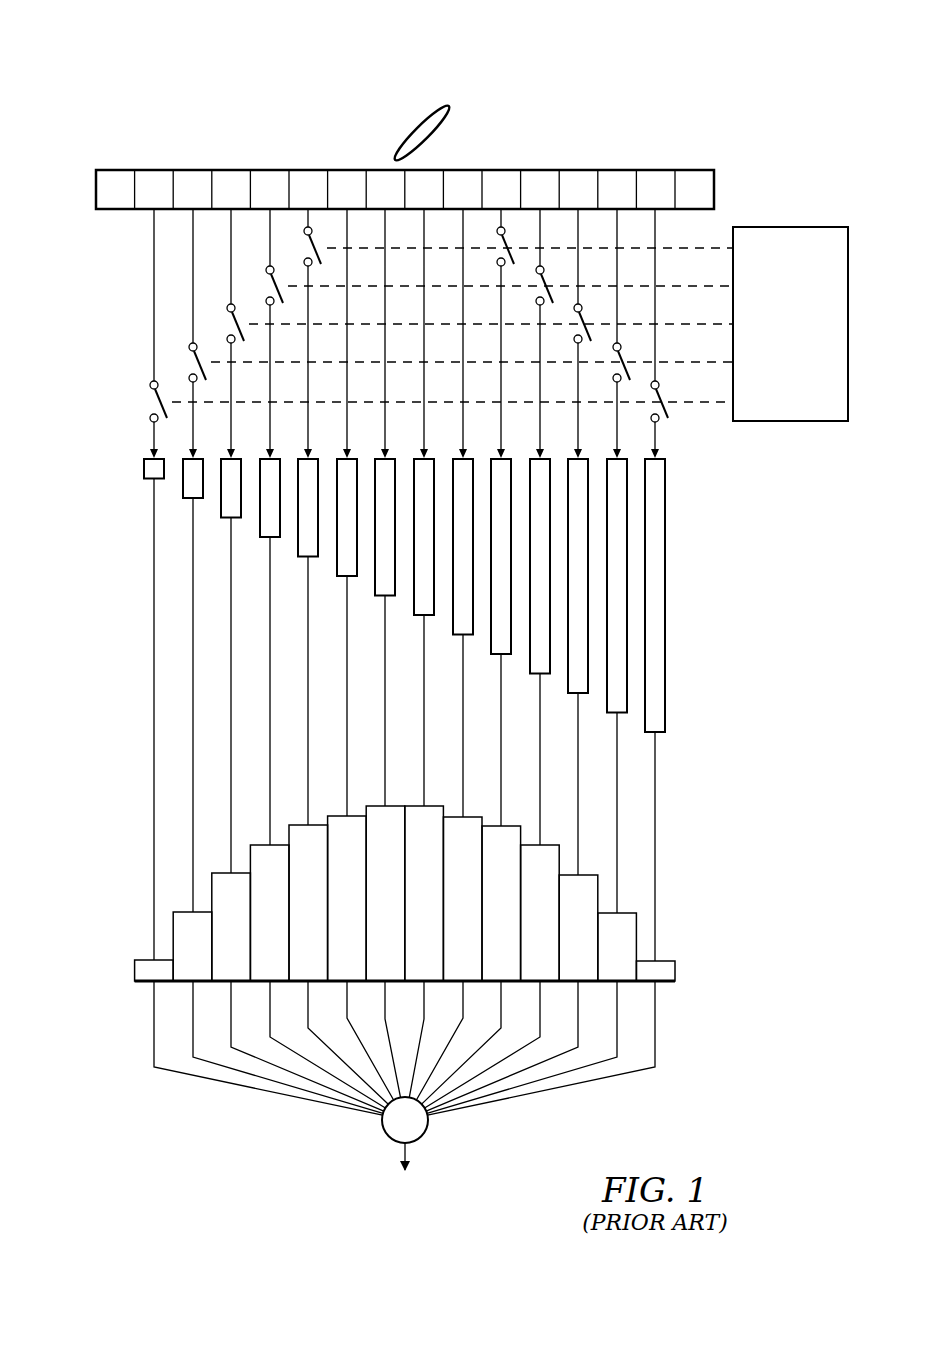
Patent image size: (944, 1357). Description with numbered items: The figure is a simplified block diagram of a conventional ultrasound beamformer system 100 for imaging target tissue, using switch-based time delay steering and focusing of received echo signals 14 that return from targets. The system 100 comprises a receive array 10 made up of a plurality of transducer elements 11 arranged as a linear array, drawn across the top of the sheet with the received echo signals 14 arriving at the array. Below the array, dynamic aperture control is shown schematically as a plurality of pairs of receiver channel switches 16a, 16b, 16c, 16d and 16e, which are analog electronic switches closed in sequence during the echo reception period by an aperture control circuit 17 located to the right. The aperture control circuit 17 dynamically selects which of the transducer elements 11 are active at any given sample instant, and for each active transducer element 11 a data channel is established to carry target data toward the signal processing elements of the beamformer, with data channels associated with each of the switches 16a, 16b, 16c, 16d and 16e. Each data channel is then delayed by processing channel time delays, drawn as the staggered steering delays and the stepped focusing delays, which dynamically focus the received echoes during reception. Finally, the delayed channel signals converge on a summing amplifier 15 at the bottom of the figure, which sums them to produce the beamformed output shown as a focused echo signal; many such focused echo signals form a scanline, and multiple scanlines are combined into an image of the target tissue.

The ultrasound beamformer system 100 is at (703, 60).
The receive array 10 is at (580, 166).
The transducer elements 11 is at (117, 180).
The received echo signals 14 is at (418, 127).
The summing amplifier 15 is at (389, 1137).
The receiver channel switch 16a is at (302, 247).
The receiver channel switch 16b is at (263, 286).
The receiver channel switch 16c is at (223, 324).
The receiver channel switch 16d is at (186, 362).
The receiver channel switch 16e is at (147, 400).
The aperture control circuit 17 is at (793, 227).